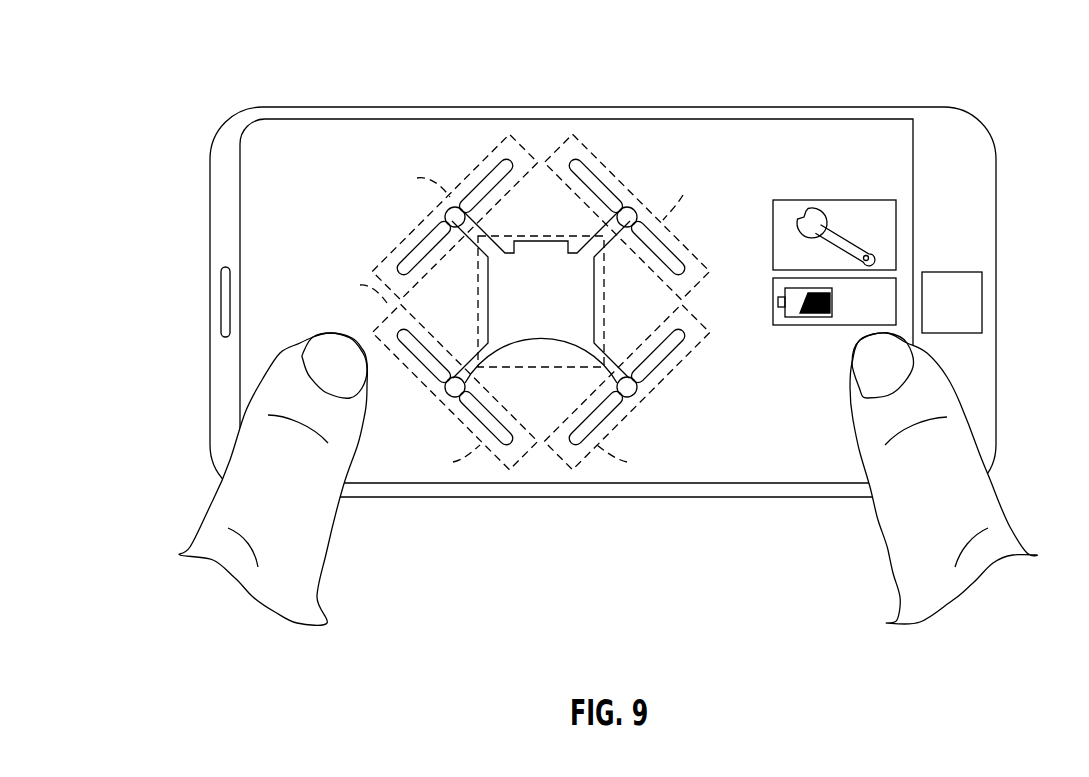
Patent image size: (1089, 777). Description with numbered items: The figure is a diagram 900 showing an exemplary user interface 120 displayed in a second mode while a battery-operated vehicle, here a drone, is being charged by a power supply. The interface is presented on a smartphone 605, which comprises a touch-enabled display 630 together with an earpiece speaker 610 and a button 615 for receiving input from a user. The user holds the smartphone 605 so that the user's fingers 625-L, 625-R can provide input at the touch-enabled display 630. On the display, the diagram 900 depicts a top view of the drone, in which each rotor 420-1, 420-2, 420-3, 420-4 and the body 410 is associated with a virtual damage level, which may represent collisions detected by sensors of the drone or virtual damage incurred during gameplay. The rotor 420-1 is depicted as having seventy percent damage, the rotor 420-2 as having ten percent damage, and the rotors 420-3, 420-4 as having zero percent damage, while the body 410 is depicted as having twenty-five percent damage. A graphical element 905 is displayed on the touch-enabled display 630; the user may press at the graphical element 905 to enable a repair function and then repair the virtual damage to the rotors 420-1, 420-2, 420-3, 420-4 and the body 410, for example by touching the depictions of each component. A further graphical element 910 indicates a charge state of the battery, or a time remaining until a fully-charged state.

The diagram 900 is at (227, 73).
The smartphone 605 is at (977, 127).
The touch-enabled display 630 is at (607, 137).
The earpiece speaker 610 is at (220, 305).
The button 615 is at (982, 302).
The user interface 120 is at (577, 335).
The body 410 is at (538, 237).
The rotor 420-1 is at (423, 240).
The rotor 420-2 is at (672, 248).
The rotor 420-3 is at (672, 353).
The rotor 420-4 is at (405, 333).
The graphical element 905 is at (835, 200).
The graphical element 910 is at (788, 328).
The finger 625-L is at (327, 550).
The finger 625-R is at (888, 550).